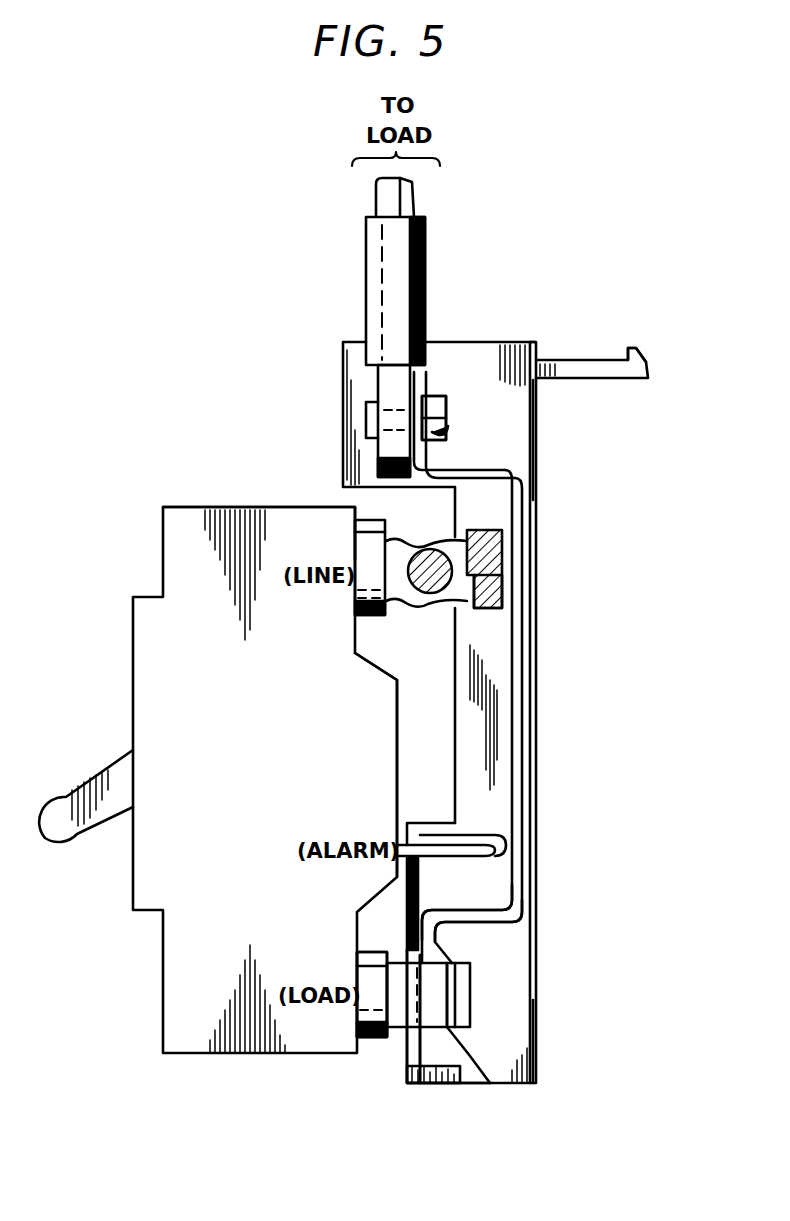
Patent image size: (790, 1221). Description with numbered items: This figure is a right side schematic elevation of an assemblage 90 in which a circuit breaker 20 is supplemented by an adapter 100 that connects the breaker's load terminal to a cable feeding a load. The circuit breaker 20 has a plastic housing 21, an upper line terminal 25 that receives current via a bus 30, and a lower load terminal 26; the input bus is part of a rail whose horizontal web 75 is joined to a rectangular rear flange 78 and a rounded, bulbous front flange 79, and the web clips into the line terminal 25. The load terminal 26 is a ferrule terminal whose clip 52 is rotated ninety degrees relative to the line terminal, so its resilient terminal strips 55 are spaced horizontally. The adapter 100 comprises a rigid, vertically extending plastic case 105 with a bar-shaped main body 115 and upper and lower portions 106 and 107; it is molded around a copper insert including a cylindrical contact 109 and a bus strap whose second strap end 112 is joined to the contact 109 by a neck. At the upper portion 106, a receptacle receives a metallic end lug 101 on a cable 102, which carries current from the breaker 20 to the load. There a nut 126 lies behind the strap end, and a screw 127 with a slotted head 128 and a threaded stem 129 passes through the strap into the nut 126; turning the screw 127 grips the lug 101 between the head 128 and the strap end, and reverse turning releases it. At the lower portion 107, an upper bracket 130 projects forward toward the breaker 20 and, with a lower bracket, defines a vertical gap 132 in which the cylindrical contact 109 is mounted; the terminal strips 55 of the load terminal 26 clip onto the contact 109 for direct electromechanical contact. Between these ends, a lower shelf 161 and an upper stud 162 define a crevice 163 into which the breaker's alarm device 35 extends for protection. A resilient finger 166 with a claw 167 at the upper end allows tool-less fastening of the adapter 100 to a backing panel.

The circuit breaker 20 is at (78, 662).
The plastic housing 21 is at (400, 712).
The line terminal 25 is at (414, 520).
The load terminal 26 is at (384, 1091).
The bus 30 is at (432, 548).
The alarm device 35 is at (470, 880).
The clip 52 is at (380, 963).
The terminal strips 55 is at (470, 1000).
The horizontal web 75 is at (503, 566).
The rear vertical flange 78 is at (503, 598).
The front vertical flange 79 is at (420, 600).
The assemblage 90 is at (264, 498).
The adapter 100 is at (606, 780).
The end lug 101 is at (388, 383).
The cable 102 is at (427, 262).
The plastic case 105 is at (500, 318).
The first portion 106 is at (537, 412).
The second portion 107 is at (537, 1050).
The cylindrical contact 109 is at (458, 1085).
The second strap end 112 is at (490, 930).
The main body 115 is at (536, 862).
The nut 126 is at (440, 392).
The screw 127 is at (376, 448).
The slotted head 128 is at (368, 425).
The threaded stem 129 is at (448, 428).
The upper bracket 130 is at (357, 910).
The vertical gap 132 is at (412, 1085).
The lower shelf 161 is at (505, 912).
The upper stud 162 is at (416, 820).
The crevice 163 is at (490, 846).
The resilient finger 166 is at (598, 360).
The claw 167 is at (646, 358).